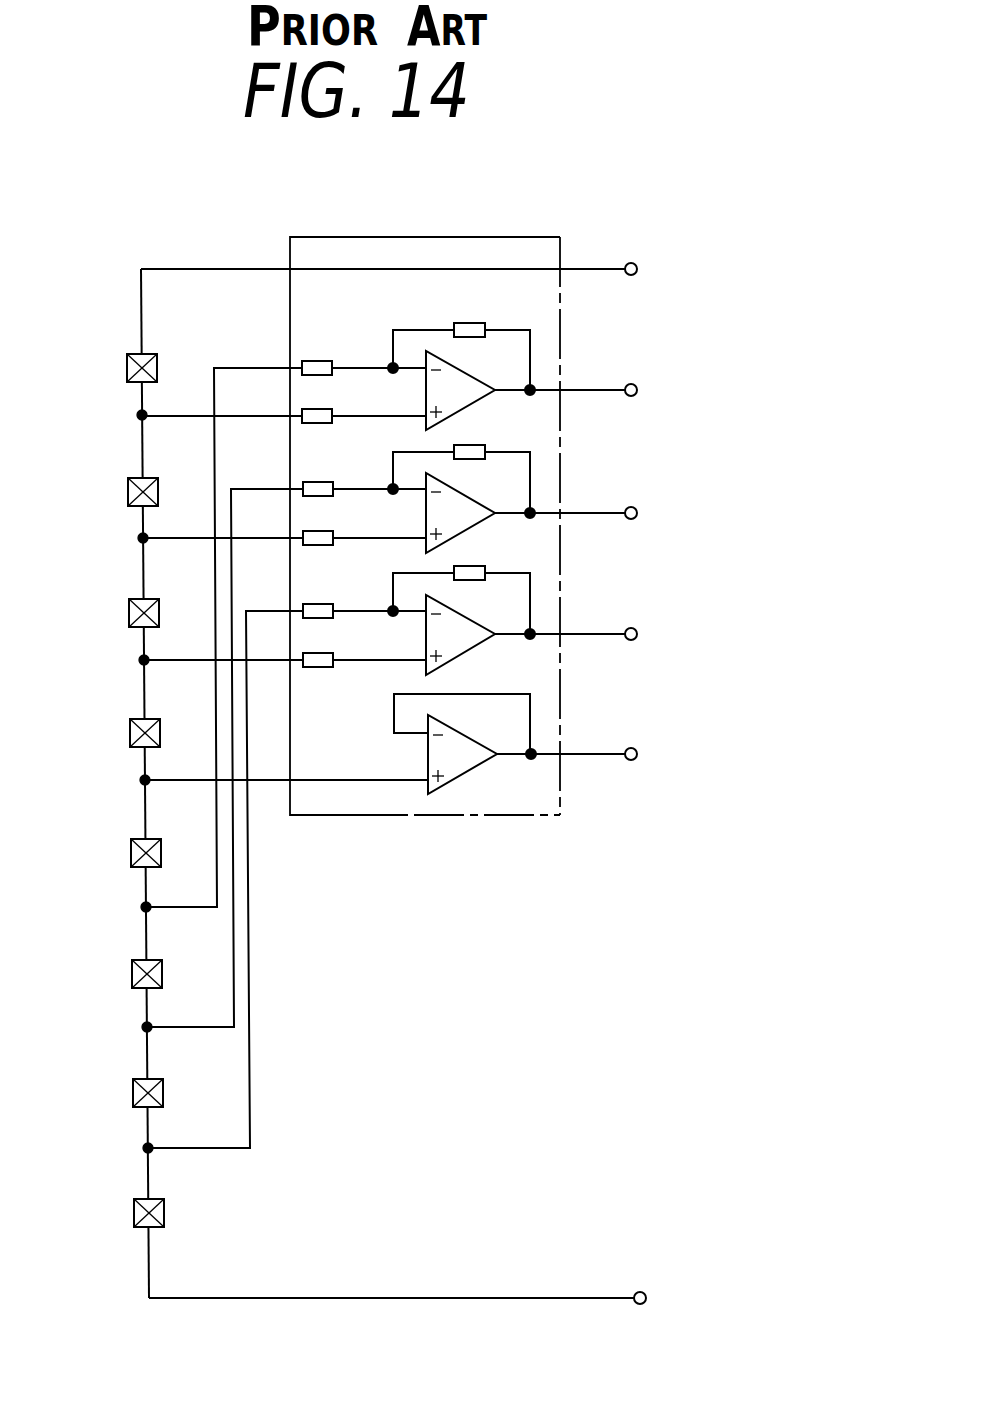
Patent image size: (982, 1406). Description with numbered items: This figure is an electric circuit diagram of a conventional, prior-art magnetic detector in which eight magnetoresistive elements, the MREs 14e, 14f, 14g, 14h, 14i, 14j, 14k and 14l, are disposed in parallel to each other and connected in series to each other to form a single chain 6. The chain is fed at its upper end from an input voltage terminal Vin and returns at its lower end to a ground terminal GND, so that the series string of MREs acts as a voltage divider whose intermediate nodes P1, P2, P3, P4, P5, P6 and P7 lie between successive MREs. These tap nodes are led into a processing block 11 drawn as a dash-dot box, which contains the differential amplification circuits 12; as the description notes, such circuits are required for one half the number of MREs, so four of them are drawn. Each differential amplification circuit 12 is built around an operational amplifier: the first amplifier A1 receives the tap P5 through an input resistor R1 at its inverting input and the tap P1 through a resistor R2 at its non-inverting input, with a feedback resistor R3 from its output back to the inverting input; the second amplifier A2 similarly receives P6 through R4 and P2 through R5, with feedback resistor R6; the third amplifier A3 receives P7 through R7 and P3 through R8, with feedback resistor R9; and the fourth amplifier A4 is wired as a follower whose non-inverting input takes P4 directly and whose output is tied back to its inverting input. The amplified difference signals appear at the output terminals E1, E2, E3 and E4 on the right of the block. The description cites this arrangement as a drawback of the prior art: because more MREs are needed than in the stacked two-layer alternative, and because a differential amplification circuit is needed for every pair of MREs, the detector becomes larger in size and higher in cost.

The resistor strip (series-connected resistance elements) 6 is at (205, 269).
The signal processing circuit 11 is at (308, 236).
The differential amplification circuit 12 is at (472, 568).
The MRE 14e is at (110, 370).
The MRE 14f is at (111, 494).
The MRE 14g is at (110, 615).
The MRE 14h is at (111, 735).
The MRE 14i is at (113, 855).
The MRE 14j is at (113, 976).
The MRE 14k is at (114, 1095).
The MRE 14l is at (115, 1215).
The tap point P1 is at (198, 416).
The tap point P2 is at (197, 539).
The tap point P3 is at (197, 661).
The tap point P4 is at (261, 781).
The tap point P5 is at (198, 646).
The tap point P6 is at (200, 766).
The tap point P7 is at (201, 888).
The resistor R1 is at (363, 351).
The resistor R2 is at (363, 402).
The feedback resistor R3 is at (470, 316).
The resistor R4 is at (364, 472).
The resistor R5 is at (364, 524).
The feedback resistor R6 is at (467, 446).
The resistor R7 is at (364, 595).
The resistor R8 is at (364, 644).
The feedback resistor R9 is at (467, 567).
The operational amplifier A1 is at (460, 390).
The operational amplifier A2 is at (460, 513).
The operational amplifier A3 is at (460, 635).
The operational amplifier A4 is at (462, 754).
The output terminal E1 is at (585, 390).
The output terminal E2 is at (585, 513).
The output terminal E3 is at (585, 634).
The output terminal E4 is at (586, 754).
The input voltage terminal Vin is at (656, 268).
The ground terminal GND is at (670, 1297).